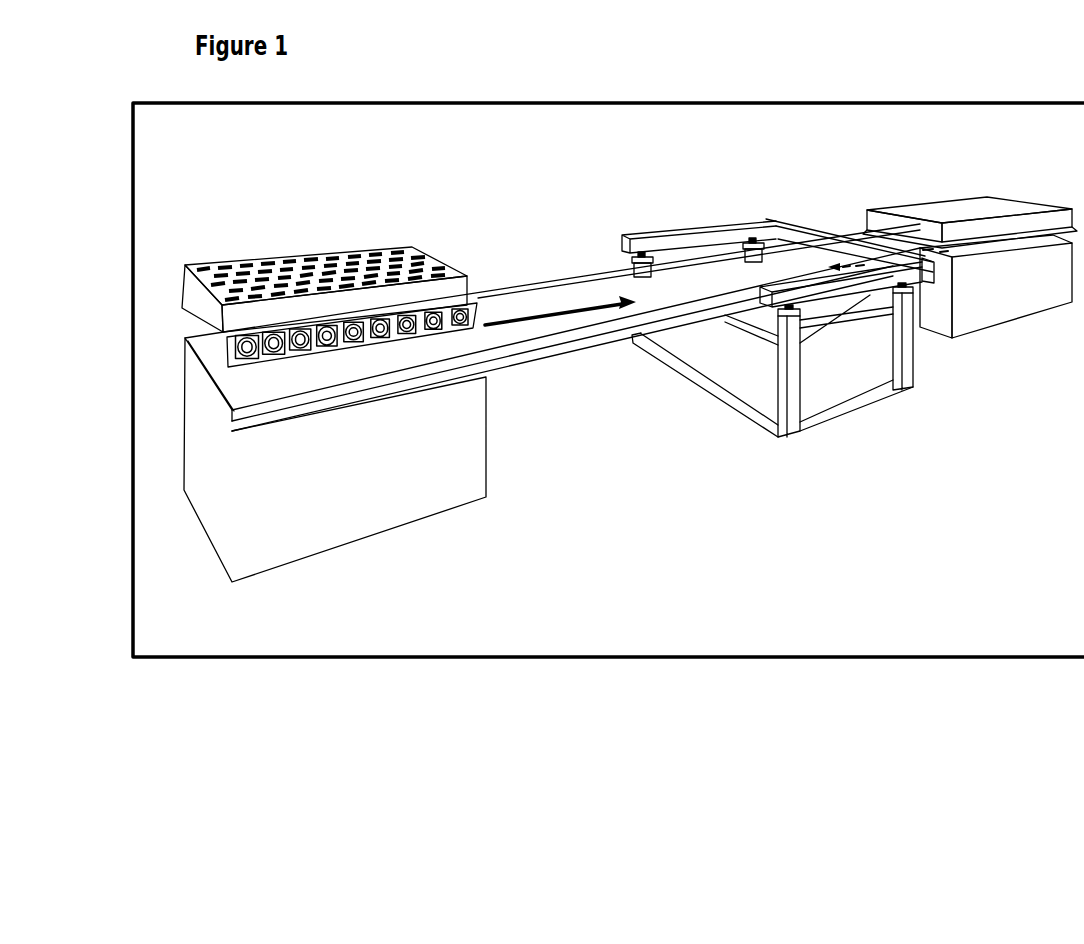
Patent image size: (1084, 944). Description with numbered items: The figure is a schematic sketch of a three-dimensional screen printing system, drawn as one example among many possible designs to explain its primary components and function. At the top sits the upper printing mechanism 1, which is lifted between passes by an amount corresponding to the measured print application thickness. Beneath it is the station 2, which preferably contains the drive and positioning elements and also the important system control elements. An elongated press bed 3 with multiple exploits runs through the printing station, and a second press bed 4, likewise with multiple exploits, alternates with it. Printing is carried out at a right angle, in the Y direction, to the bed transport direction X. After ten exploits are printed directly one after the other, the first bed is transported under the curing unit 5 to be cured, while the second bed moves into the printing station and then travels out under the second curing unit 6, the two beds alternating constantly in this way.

The upper printing mechanism 1 is at (705, 238).
The station 2 is at (822, 368).
The press bed 3 is at (366, 353).
The second press bed 4 is at (953, 253).
The curing unit 5 is at (382, 268).
The second curing unit 6 is at (940, 213).